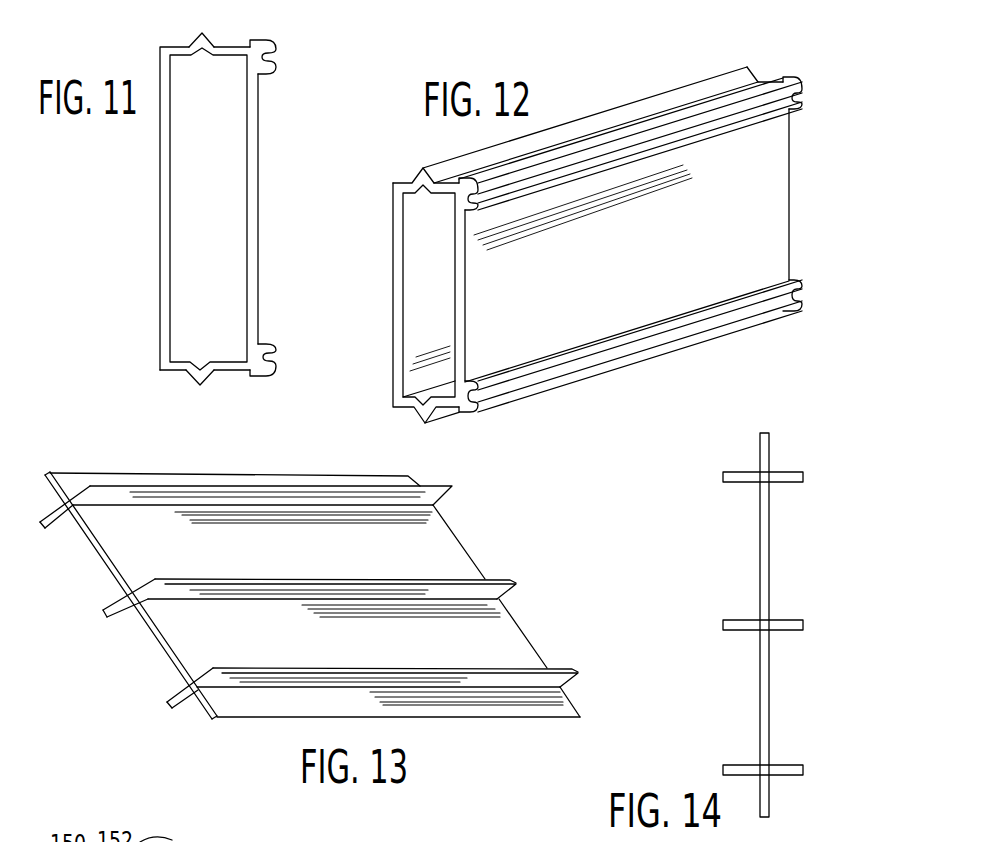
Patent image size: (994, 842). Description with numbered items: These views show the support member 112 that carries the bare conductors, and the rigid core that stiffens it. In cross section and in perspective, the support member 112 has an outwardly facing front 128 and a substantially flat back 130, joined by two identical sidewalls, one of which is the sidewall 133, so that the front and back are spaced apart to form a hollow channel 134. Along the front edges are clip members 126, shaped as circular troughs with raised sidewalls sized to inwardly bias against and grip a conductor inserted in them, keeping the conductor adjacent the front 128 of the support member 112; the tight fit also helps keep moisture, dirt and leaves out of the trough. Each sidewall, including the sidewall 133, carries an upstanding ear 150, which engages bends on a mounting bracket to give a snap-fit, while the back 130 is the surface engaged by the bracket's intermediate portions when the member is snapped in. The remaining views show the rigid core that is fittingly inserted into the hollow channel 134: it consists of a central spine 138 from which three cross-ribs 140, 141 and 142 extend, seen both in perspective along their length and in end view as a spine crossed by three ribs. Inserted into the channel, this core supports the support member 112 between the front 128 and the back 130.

In FIG. 11, the support member 112 is at (196, 215).
In FIG. 12, the support member 112 is at (603, 245).
In FIG. 11, the clip member 126 is at (276, 44).
In FIG. 12, the clip member 126 is at (683, 146).
In FIG. 11, the outwardly facing front 128 is at (259, 178).
In FIG. 12, the outwardly facing front 128 is at (650, 257).
In FIG. 11, the flat back 130 is at (160, 285).
In FIG. 11, the sidewall 133 is at (228, 373).
In FIG. 11, the hollow channel 134 is at (224, 267).
In FIG. 12, the hollow channel 134 is at (422, 272).
In FIG. 11, the upstanding ear 150 is at (202, 32).
In FIG. 13, the central spine 138 is at (448, 552).
In FIG. 14, the central spine 138 is at (770, 558).
In FIG. 13, the cross-rib 140 is at (452, 492).
In FIG. 14, the cross-rib 140 is at (801, 482).
In FIG. 13, the cross-rib 141 is at (500, 590).
In FIG. 14, the cross-rib 141 is at (802, 630).
In FIG. 13, the cross-rib 142 is at (565, 684).
In FIG. 14, the cross-rib 142 is at (800, 775).